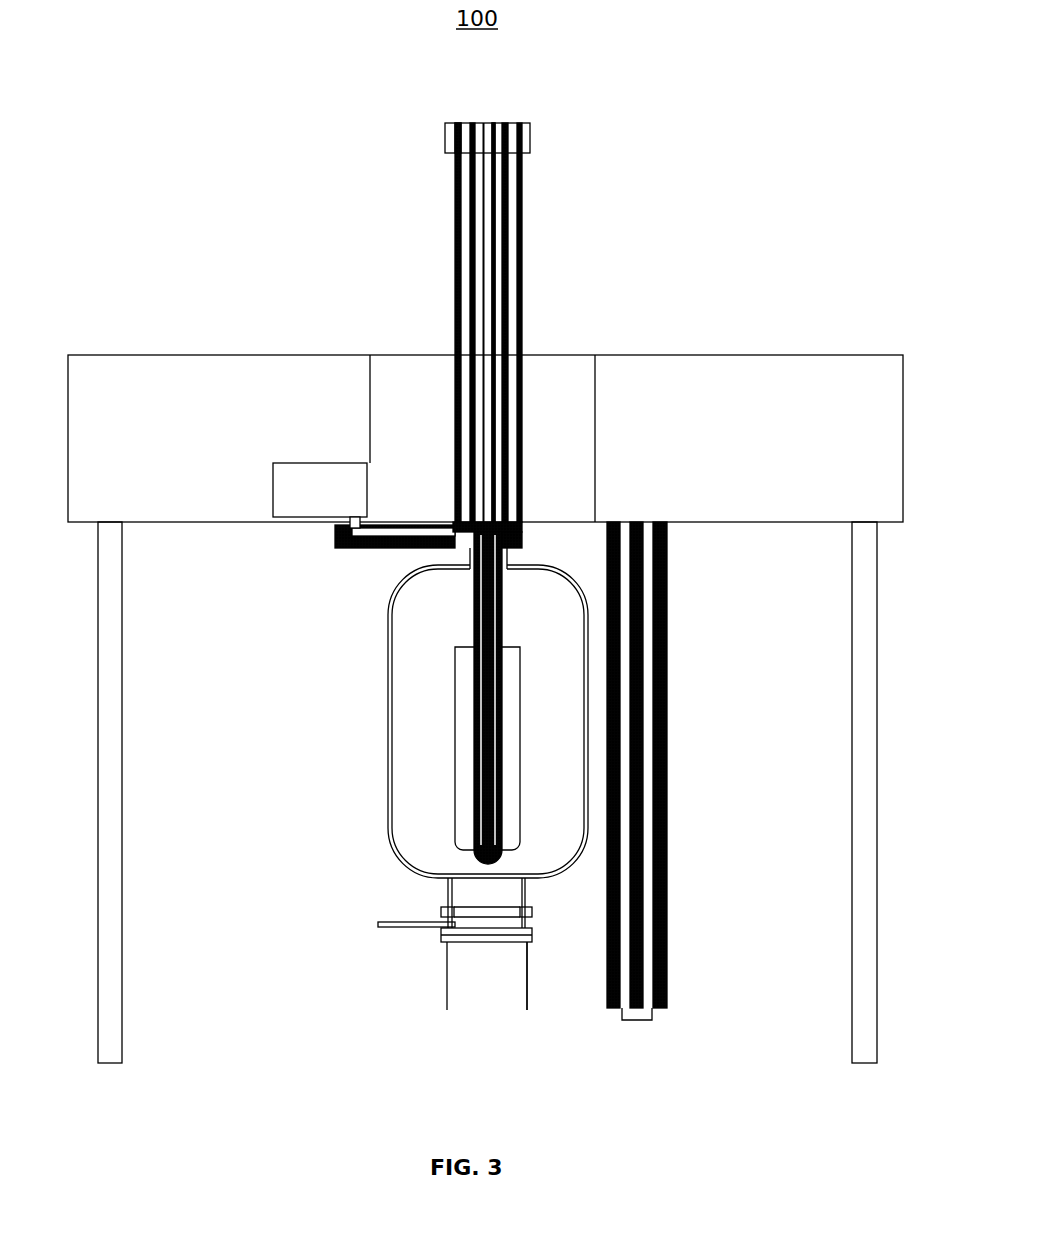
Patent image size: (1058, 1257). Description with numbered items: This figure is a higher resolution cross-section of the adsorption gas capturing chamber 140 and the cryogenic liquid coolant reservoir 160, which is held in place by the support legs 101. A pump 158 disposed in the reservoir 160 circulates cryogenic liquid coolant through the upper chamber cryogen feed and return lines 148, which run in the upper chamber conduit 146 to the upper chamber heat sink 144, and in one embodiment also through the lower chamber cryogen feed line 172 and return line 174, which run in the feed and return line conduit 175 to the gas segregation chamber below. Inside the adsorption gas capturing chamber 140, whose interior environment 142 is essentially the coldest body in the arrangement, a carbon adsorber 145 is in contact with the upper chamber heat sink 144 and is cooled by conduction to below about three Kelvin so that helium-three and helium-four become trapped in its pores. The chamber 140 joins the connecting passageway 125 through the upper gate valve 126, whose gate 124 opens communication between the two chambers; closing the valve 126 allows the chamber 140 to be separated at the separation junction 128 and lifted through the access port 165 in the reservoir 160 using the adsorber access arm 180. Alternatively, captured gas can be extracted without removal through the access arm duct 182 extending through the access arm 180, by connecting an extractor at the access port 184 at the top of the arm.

The support legs 101 is at (122, 925).
The gate 124 is at (410, 925).
The connecting passageway 125 is at (530, 950).
The upper gate valve 126 is at (475, 905).
The separation junction 128 is at (500, 945).
The adsorption gas capturing chamber 140 is at (390, 780).
The adsorption gas capturing chamber environment 142 is at (566, 627).
The upper chamber heat sink 144 is at (470, 637).
The carbon adsorber 145 is at (455, 712).
The upper chamber conduit 146 is at (335, 537).
The upper chamber cryogen feed and return lines 148 is at (430, 548).
The pump 158 is at (320, 463).
The cryogenic liquid coolant reservoir 160 is at (688, 355).
The access port 165 is at (413, 395).
The lower chamber cryogen feed line 172 is at (633, 718).
The lower chamber cryogen return line 174 is at (655, 820).
The feed and return line conduit 175 is at (665, 940).
The adsorber access arm 180 is at (455, 278).
The access arm duct 182 is at (495, 263).
The access port 184 is at (488, 122).